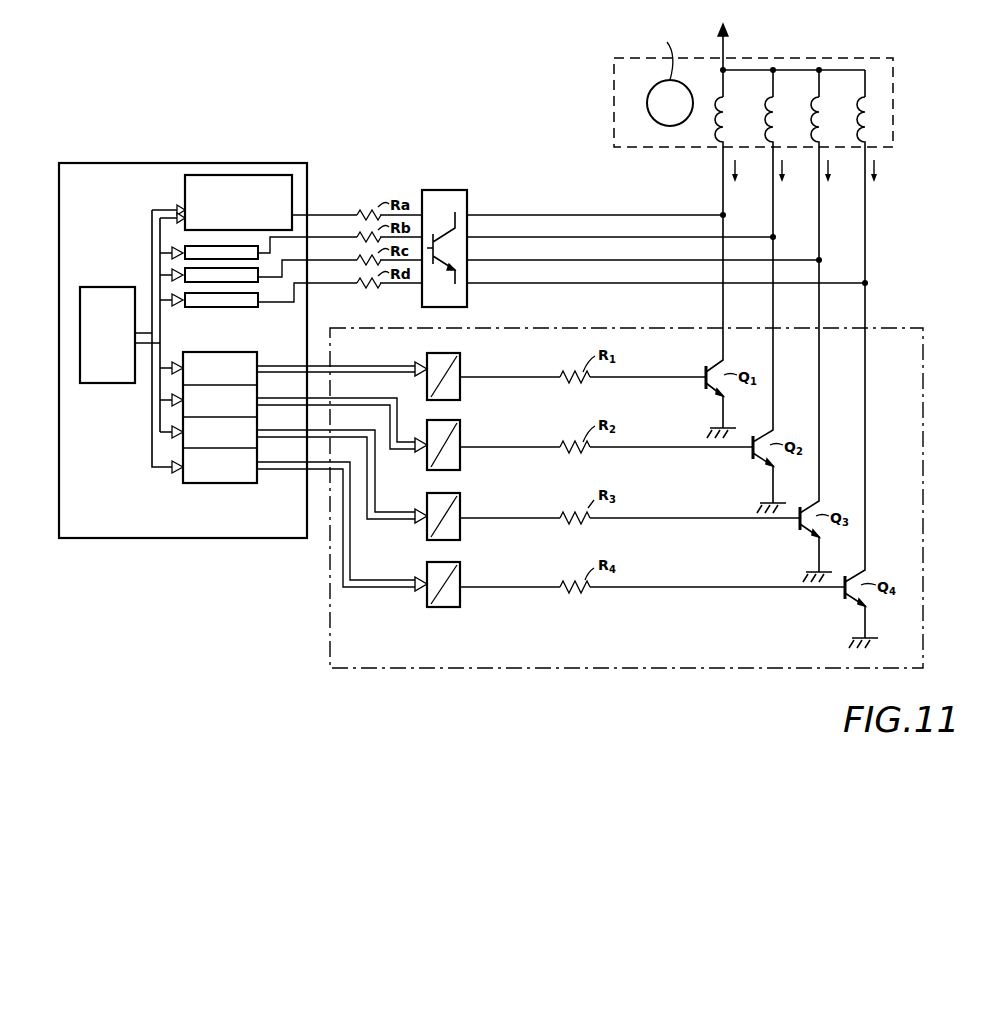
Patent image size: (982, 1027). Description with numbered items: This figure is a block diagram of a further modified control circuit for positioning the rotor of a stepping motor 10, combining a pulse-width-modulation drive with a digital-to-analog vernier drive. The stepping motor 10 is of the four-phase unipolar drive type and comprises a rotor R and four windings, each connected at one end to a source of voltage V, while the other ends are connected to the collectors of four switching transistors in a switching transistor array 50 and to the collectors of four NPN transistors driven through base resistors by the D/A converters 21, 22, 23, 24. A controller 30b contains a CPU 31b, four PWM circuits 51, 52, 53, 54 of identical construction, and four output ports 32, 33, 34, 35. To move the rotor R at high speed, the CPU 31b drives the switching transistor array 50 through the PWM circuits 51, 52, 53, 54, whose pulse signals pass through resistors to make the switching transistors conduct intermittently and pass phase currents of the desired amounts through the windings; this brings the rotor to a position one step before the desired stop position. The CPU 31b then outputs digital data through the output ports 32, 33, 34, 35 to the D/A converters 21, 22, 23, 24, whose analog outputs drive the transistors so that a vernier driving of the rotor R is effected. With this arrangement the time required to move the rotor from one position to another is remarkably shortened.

The stepping motor 10 is at (893, 105).
The D/A converter 21 is at (462, 372).
The D/A converter 22 is at (462, 434).
The D/A converter 23 is at (465, 504).
The D/A converter 24 is at (465, 572).
The controller 30b is at (288, 163).
The CPU 31b is at (112, 384).
The output port 32 is at (240, 352).
The output port 33 is at (258, 398).
The output port 34 is at (258, 433).
The output port 35 is at (240, 483).
The switching transistor array 50 is at (451, 190).
The PWM circuit 51 is at (258, 175).
The PWM circuit 52 is at (180, 250).
The PWM circuit 53 is at (180, 274).
The PWM circuit 54 is at (199, 307).